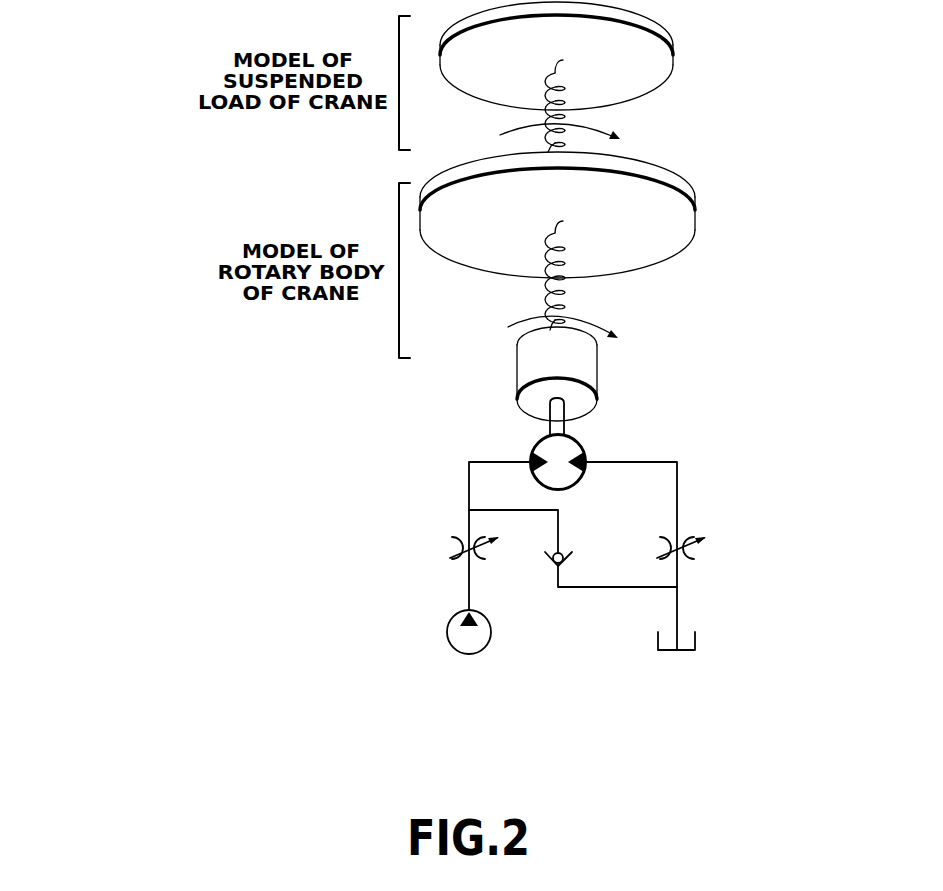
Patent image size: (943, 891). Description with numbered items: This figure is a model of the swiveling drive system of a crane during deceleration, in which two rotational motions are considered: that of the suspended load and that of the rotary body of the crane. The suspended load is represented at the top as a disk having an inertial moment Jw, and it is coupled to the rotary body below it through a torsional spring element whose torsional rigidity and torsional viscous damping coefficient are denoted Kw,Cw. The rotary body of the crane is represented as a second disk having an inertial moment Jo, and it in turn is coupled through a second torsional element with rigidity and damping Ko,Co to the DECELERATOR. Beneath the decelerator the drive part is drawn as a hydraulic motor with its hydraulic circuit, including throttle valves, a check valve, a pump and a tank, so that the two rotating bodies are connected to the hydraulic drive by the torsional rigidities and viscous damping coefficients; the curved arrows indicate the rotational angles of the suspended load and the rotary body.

The inertial moment of the suspended load Jw is at (556, 56).
The torsional rigidity and torsional viscous damping coefficient between the suspend Kw,Cw is at (567, 120).
The inertial moment of the rotary body of the crane Jo is at (557, 215).
The torsional rigidity and torsional viscous damping coefficient between the rotary Ko,Co is at (567, 297).
The decelerator DECELERATOR is at (568, 363).